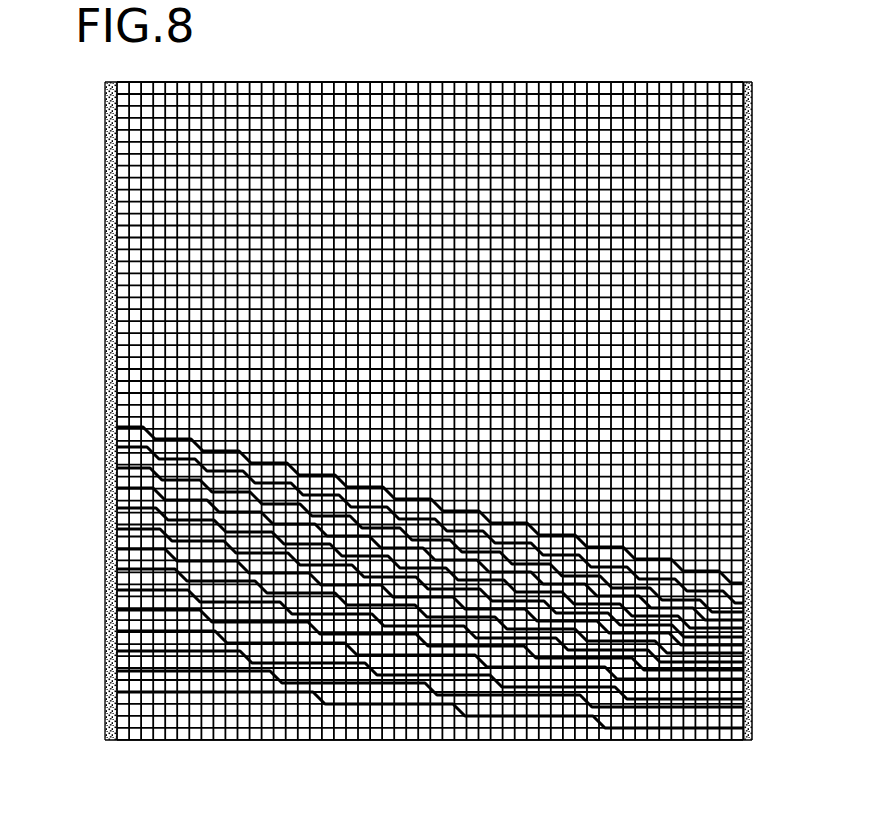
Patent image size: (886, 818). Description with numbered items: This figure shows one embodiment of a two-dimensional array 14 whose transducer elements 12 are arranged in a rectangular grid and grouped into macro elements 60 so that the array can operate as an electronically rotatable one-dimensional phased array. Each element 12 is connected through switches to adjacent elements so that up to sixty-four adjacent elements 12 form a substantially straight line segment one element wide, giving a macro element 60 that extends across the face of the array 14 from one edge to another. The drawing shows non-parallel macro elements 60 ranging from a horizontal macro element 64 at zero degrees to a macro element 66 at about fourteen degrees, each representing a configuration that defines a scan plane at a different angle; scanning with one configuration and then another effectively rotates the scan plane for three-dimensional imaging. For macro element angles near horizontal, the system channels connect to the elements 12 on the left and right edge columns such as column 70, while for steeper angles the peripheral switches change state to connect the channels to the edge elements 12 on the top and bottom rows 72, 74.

The element 12 is at (238, 80).
The two-dimensional array 14 is at (762, 171).
The macro element 60 is at (103, 428).
The horizontal macro element 64 is at (753, 723).
The about fourteen degree macro element 66 is at (748, 583).
The column 70 is at (109, 744).
The row 72 is at (754, 740).
The row 74 is at (753, 82).